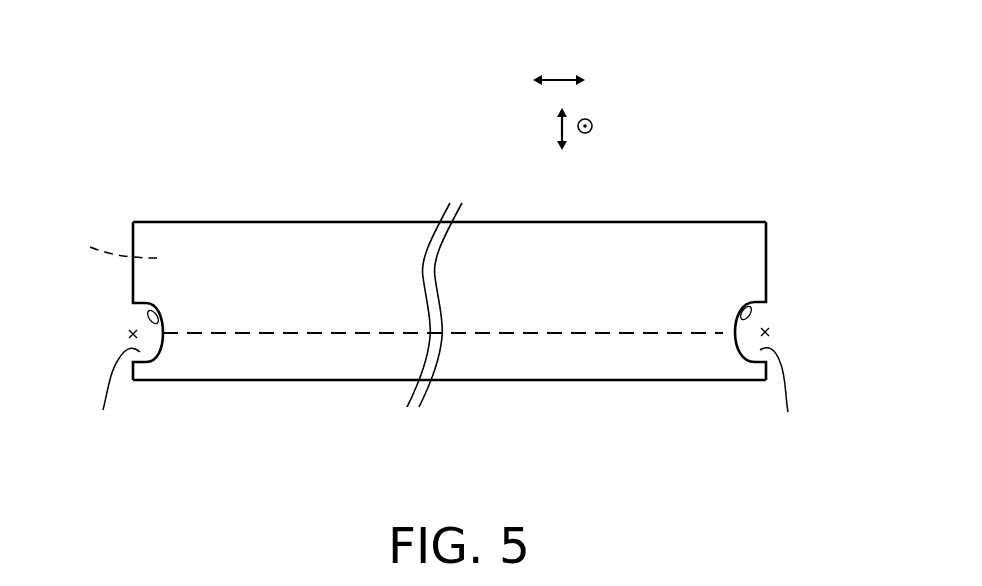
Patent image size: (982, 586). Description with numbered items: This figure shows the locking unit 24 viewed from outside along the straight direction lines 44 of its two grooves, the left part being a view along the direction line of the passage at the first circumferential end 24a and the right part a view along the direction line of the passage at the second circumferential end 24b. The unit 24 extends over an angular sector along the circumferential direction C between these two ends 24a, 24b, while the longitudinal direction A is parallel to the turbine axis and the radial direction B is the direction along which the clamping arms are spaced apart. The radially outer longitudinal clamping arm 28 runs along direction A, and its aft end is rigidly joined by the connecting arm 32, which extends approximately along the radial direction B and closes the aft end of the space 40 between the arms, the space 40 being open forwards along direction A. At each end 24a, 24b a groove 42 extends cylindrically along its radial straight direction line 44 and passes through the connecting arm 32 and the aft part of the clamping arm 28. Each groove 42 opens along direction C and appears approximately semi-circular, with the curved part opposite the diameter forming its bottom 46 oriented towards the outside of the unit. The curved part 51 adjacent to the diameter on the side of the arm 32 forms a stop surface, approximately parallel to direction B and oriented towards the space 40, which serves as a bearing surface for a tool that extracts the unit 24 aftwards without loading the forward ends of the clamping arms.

The locking unit 24 is at (446, 275).
The first circumferential end 24a is at (171, 216).
The second circumferential end 24b is at (709, 215).
The radially outer longitudinal clamping arm 28 is at (268, 235).
The connecting arm 32 is at (287, 363).
The space between arms 40 is at (107, 245).
The groove 42 is at (150, 318).
The straight direction line 44 is at (126, 335).
The bottom of the groove 46 is at (165, 325).
The stop surface 51 is at (450, 394).
The longitudinal direction A is at (560, 128).
The radial direction B is at (595, 122).
The circumferential direction C is at (557, 78).